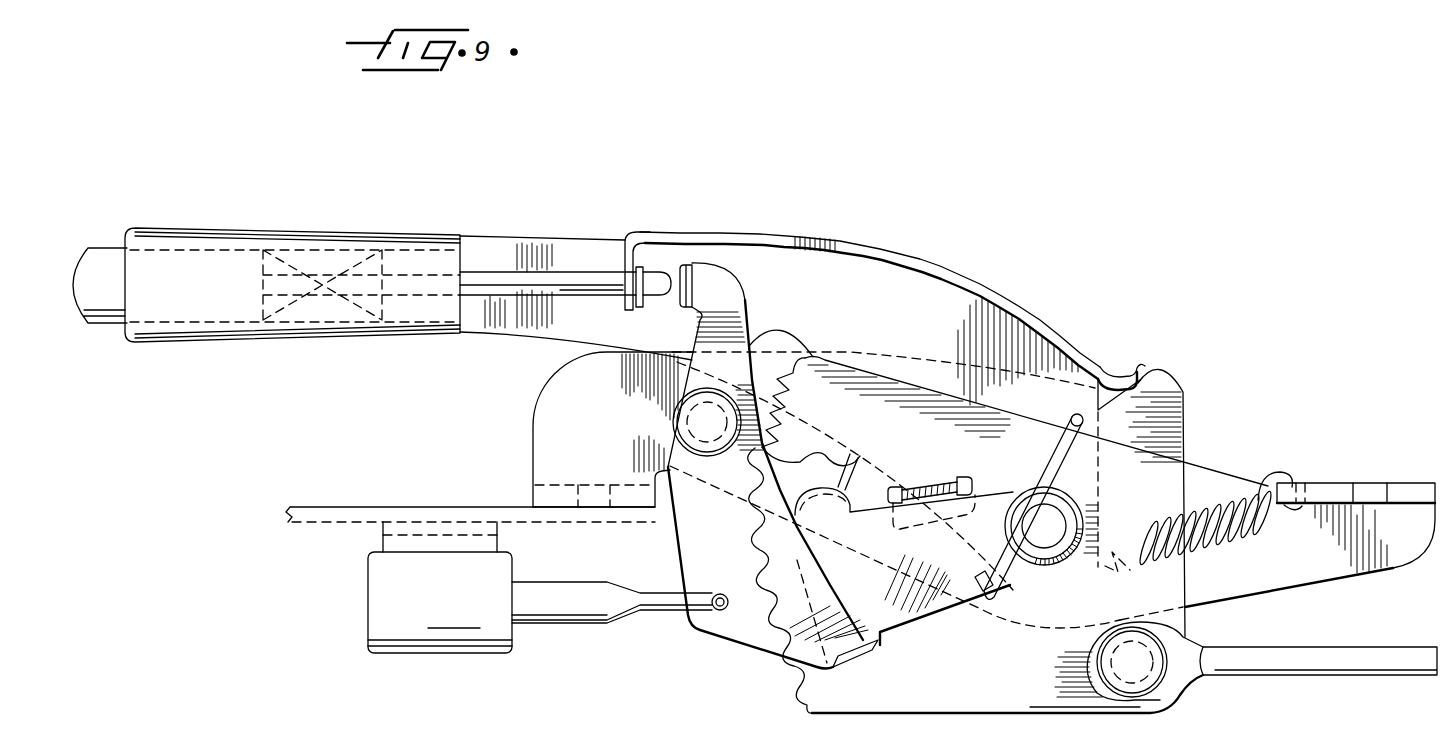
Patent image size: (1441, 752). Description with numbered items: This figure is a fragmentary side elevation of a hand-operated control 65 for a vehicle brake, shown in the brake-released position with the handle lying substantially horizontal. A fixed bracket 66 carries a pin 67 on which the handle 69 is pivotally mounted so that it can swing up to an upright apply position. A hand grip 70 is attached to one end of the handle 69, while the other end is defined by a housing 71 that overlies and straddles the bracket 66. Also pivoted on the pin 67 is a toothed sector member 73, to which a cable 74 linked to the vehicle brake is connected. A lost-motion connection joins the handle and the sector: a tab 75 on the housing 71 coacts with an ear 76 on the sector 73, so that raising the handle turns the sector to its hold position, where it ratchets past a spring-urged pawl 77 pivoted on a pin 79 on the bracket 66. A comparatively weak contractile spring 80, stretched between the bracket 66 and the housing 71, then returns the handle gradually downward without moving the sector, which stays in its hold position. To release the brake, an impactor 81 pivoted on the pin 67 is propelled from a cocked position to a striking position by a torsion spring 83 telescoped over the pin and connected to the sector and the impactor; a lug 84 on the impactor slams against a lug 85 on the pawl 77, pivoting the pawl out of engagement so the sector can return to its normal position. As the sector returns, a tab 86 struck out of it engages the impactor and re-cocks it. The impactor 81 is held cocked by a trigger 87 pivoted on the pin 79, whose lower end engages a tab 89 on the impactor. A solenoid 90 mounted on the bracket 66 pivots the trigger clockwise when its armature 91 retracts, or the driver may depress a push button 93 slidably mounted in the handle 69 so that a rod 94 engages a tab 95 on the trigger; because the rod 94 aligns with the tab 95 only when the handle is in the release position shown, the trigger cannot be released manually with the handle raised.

The hand-operated control 65 is at (1052, 260).
The bracket 66 is at (1327, 568).
The pin 67 is at (1052, 515).
The handle 69 is at (578, 236).
The hand grip 70 is at (212, 232).
The housing 71 is at (950, 290).
The toothed sector member 73 is at (917, 393).
The cable 74 is at (1330, 672).
The tab 75 is at (1128, 370).
The ear 76 is at (1188, 382).
The pawl 77 is at (780, 338).
The pin 79 is at (683, 417).
The contractile spring 80 is at (1237, 533).
The impactor 81 is at (918, 612).
The torsion spring 83 is at (1045, 457).
The lug 84 is at (845, 460).
The lug 85 is at (842, 468).
The tab 86 is at (948, 486).
The trigger 87 is at (685, 557).
The tab 89 is at (858, 658).
The solenoid 90 is at (453, 647).
The armature 91 is at (567, 622).
The push button 93 is at (104, 255).
The rod 94 is at (560, 297).
The tab 95 is at (695, 282).